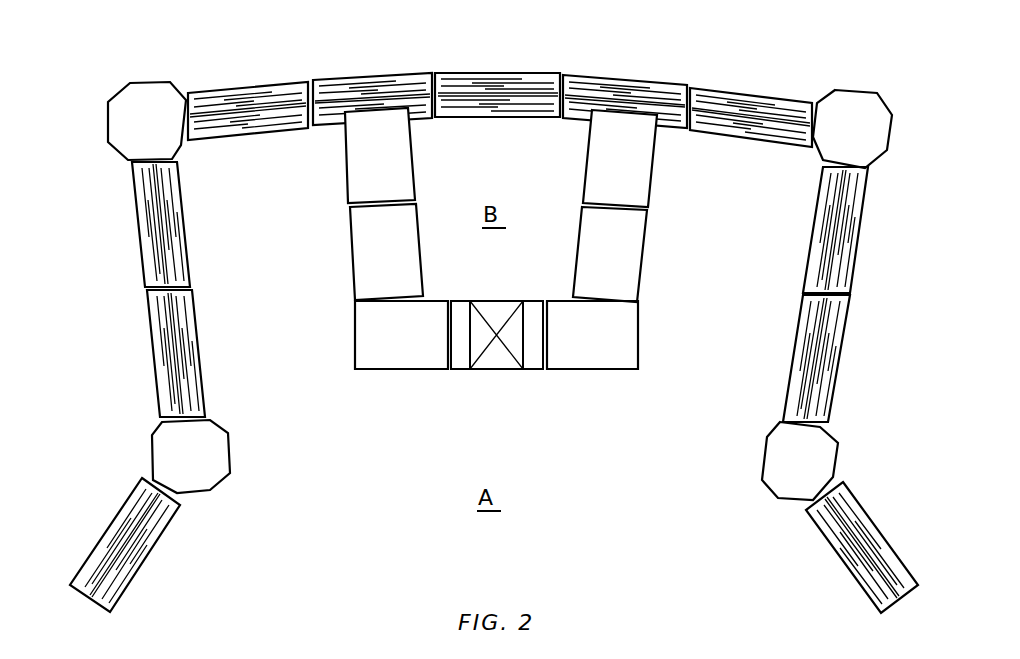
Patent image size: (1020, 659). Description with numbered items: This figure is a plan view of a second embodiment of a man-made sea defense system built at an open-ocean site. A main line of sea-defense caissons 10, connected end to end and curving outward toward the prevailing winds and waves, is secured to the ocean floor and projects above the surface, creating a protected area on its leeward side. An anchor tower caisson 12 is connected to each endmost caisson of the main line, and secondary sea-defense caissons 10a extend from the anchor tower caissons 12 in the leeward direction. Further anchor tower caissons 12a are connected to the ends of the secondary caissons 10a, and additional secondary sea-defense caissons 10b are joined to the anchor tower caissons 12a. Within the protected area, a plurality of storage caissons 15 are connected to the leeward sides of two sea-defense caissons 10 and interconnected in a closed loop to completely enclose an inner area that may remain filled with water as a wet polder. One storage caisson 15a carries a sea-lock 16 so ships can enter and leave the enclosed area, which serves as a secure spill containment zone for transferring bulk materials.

The sea-defense caissons 10 is at (213, 98).
The secondary sea-defense caissons 10a is at (150, 237).
The secondary sea-defense caissons 10b is at (140, 543).
The anchor tower caisson 12 is at (145, 135).
The anchor tower caissons 12a is at (205, 468).
The storage caissons 15 is at (363, 163).
The storage caisson 15a is at (527, 357).
The sea-lock 16 is at (497, 358).